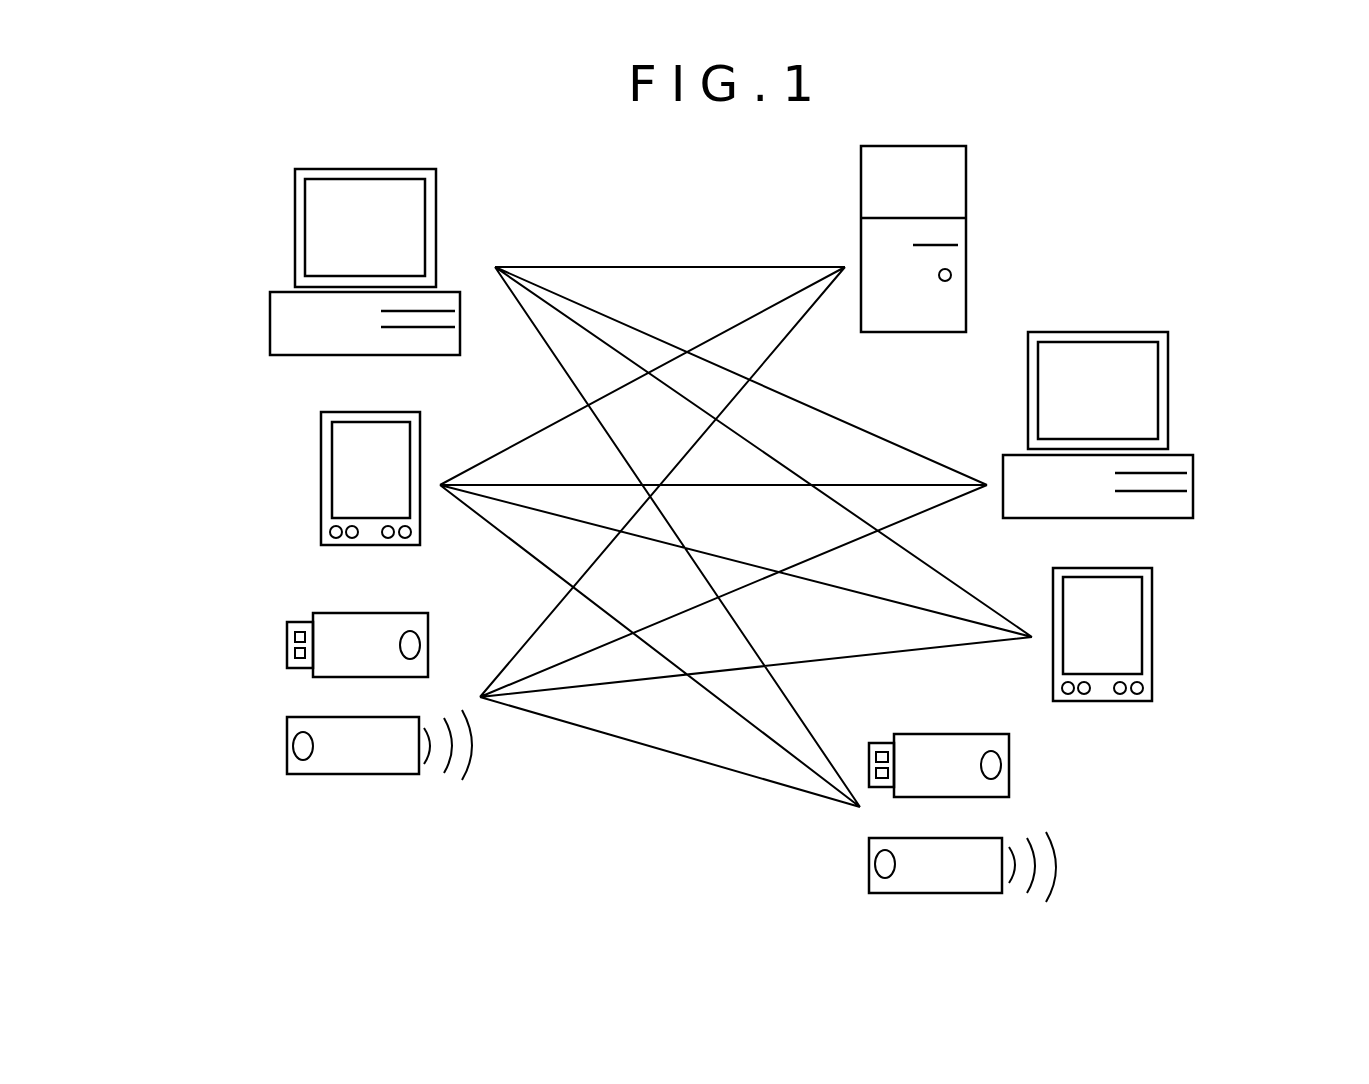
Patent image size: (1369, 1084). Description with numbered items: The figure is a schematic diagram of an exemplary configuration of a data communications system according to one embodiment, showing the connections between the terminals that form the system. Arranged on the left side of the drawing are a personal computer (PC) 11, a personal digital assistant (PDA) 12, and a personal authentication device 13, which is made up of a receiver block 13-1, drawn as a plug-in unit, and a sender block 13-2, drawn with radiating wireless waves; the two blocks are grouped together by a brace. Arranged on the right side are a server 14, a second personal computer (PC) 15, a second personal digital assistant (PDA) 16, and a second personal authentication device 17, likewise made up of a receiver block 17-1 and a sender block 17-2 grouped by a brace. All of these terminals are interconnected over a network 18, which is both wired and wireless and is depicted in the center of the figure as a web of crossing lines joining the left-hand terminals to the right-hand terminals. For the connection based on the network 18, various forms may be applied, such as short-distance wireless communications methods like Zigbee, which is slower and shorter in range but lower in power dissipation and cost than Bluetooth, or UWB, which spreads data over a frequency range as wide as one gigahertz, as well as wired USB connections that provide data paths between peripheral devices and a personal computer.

The personal computer 11 is at (270, 330).
The personal digital assistant 12 is at (321, 468).
The personal authentication device 13 is at (182, 610).
The receiver block 13-1 is at (287, 644).
The sender block 13-2 is at (287, 747).
The server 14 is at (966, 180).
The personal computer 15 is at (1193, 490).
The personal digital assistant 16 is at (1152, 622).
The personal authentication device 17 is at (1125, 735).
The receiver block 17-1 is at (1009, 765).
The sender block 17-2 is at (975, 893).
The network 18 is at (637, 265).